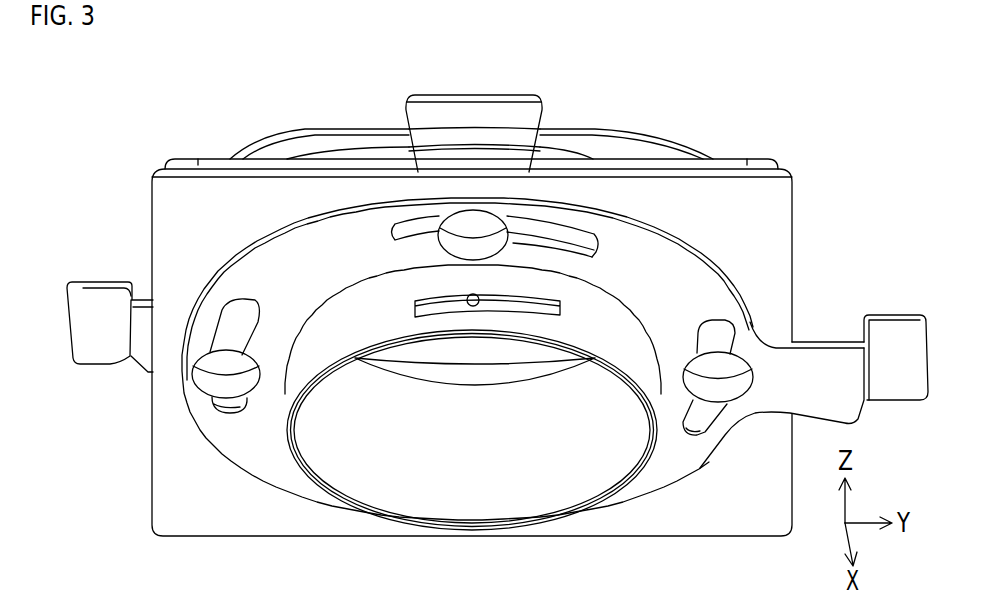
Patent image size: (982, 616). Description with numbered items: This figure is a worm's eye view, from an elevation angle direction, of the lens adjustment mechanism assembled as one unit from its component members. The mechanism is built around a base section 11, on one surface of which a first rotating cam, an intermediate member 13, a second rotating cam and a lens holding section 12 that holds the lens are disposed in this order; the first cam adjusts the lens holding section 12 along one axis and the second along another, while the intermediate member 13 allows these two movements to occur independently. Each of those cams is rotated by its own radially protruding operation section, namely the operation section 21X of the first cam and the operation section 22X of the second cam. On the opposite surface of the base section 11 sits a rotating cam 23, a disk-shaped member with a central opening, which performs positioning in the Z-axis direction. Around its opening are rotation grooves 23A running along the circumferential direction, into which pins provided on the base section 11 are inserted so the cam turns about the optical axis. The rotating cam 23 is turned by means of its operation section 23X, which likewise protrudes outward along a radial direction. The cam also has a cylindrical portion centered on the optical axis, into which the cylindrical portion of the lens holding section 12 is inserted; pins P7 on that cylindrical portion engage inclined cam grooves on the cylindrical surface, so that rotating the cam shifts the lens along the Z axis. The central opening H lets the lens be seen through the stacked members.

The base section 11 is at (785, 240).
The lens holding section 12 is at (617, 140).
The intermediate member 13 is at (728, 165).
The operation section 21X is at (472, 100).
The operation section 22X is at (75, 297).
The operation section 23X is at (830, 355).
The rotating cam 23 is at (662, 475).
The rotation grooves 23A is at (407, 218).
The opening / hole H is at (507, 488).
The pins P7 is at (472, 308).